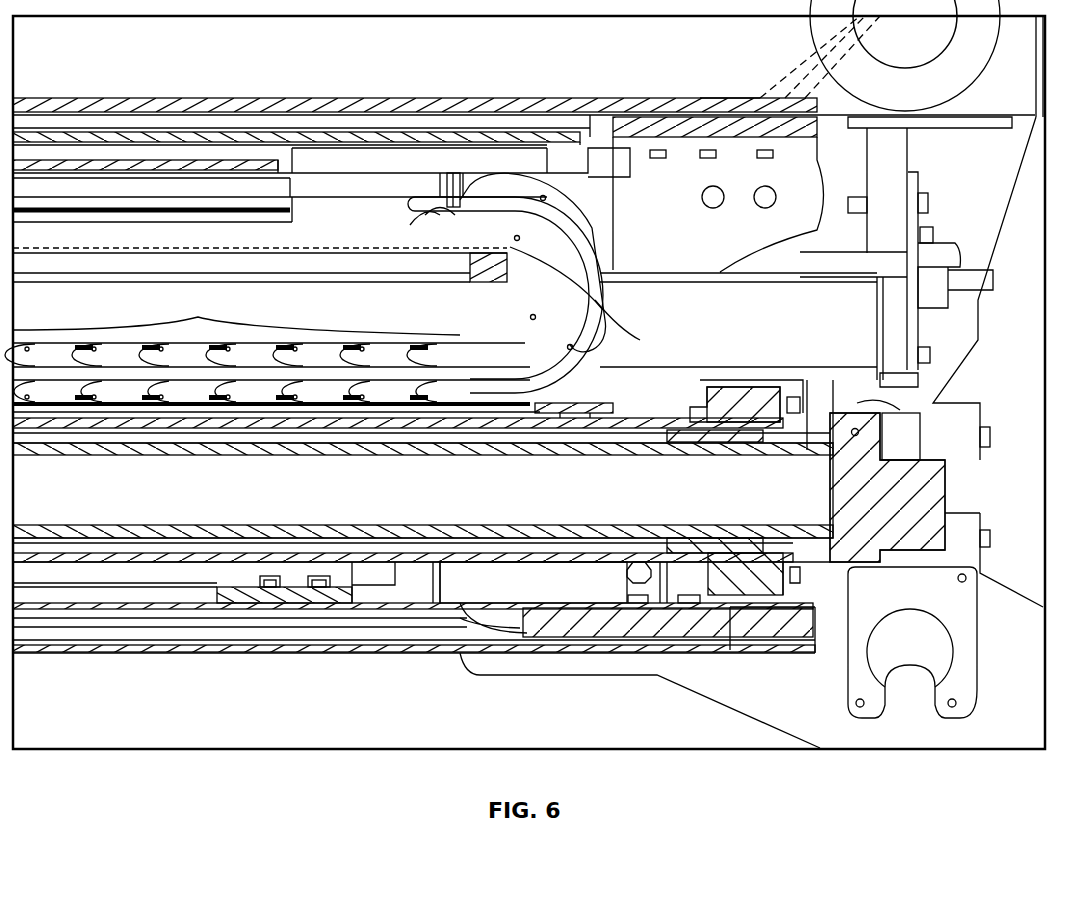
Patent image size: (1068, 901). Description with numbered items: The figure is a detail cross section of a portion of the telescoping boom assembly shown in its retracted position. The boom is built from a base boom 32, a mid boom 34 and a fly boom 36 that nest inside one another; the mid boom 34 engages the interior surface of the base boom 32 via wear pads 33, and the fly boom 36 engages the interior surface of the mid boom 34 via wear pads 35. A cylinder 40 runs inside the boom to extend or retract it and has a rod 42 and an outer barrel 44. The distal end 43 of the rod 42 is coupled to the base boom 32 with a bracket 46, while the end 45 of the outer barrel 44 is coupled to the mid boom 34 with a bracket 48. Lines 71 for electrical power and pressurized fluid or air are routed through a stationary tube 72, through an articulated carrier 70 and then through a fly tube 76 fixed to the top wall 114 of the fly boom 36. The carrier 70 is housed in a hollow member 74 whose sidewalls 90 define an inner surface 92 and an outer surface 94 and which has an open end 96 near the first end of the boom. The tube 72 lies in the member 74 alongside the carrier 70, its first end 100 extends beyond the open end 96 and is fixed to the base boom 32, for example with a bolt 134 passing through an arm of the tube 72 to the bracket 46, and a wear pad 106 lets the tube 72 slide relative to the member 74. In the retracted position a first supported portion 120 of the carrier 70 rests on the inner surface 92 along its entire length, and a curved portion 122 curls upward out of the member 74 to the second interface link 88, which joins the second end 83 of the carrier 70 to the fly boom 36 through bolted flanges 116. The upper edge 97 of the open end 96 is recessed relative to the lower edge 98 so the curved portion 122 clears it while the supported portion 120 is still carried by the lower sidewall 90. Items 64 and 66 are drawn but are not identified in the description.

The base boom 32 is at (302, 98).
The wear pads 33 is at (660, 120).
The mid boom 34 is at (170, 136).
The wear pads 35 is at (455, 180).
The fly boom 36 is at (360, 182).
The cylinder 40 is at (225, 562).
The rod 42 is at (870, 612).
The distal end 43 is at (802, 600).
The outer barrel 44 is at (580, 637).
The end 45 is at (679, 600).
The bracket 46 is at (870, 555).
The bracket 48 is at (765, 595).
The lower housing 64 is at (372, 627).
The guide 66 is at (480, 640).
The carrier 70 is at (575, 245).
The lines 71 is at (100, 195).
The tube 72 is at (670, 270).
The member 74 is at (140, 262).
The fly tube 76 is at (52, 220).
The second end 83 is at (565, 180).
The second interface link 88 is at (462, 185).
The sidewalls 90 is at (385, 405).
The inner surface 92 is at (588, 392).
The outer surface 94 is at (264, 245).
The open end 96 is at (610, 322).
The upper edge 97 is at (570, 222).
The lower edge 98 is at (700, 365).
The first end 100 is at (822, 285).
The wear pad 106 is at (495, 272).
The top wall 114 is at (140, 165).
The flanges 116 is at (420, 208).
The first supported portion 120 is at (267, 346).
The curved portion 122 is at (622, 343).
The bolt 134 is at (950, 460).